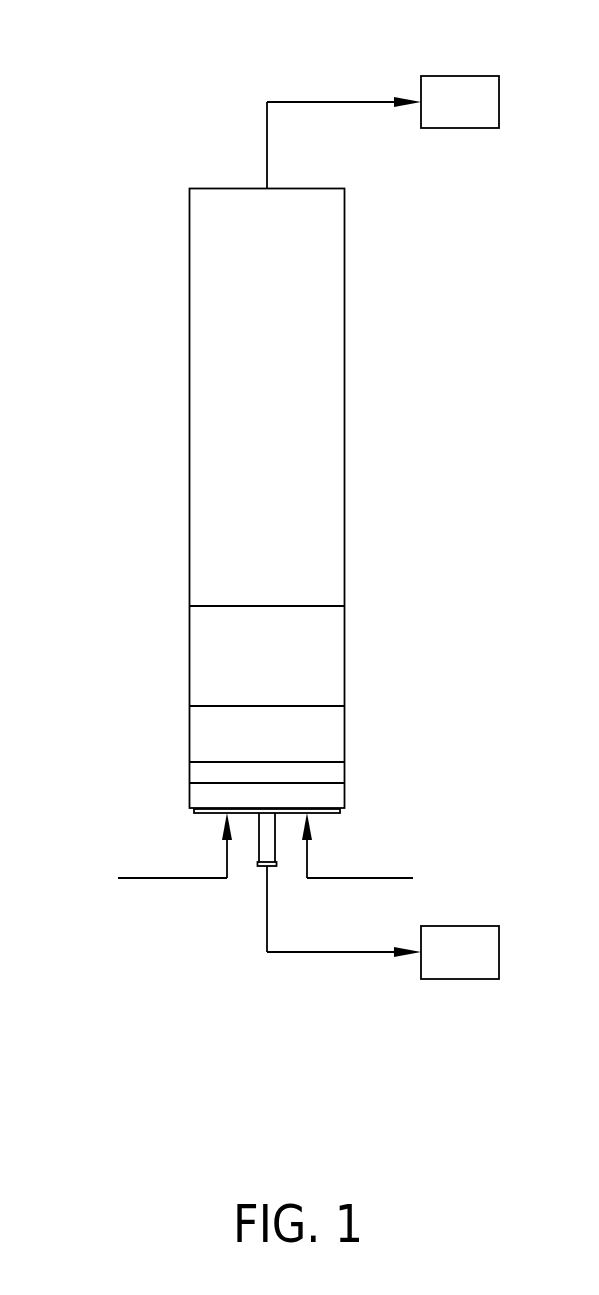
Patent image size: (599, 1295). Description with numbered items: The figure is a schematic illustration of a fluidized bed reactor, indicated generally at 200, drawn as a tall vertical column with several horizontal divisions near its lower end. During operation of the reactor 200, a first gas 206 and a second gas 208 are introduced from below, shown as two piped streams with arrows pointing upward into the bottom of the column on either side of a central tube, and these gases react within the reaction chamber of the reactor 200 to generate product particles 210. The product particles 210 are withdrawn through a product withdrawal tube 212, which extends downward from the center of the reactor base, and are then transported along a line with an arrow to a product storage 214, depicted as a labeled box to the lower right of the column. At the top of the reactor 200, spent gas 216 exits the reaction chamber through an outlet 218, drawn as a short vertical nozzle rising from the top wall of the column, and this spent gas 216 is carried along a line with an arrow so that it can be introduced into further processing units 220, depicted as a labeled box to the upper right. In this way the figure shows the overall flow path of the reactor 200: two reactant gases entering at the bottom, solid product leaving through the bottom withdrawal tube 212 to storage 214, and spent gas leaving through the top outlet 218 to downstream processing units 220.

The fluidized bed reactor 200 is at (150, 260).
The first gas 206 is at (152, 878).
The second gas 208 is at (360, 878).
The product particles 210 is at (343, 952).
The product withdrawal tube 212 is at (265, 866).
The product storage 214 is at (485, 971).
The spent gas 216 is at (316, 102).
The outlet 218 is at (265, 188).
The further processing units 220 is at (485, 118).